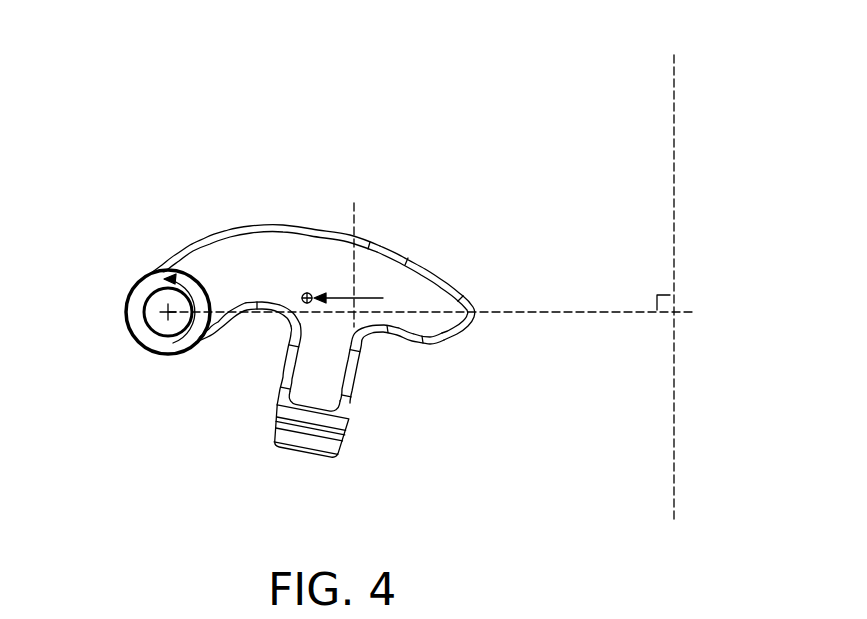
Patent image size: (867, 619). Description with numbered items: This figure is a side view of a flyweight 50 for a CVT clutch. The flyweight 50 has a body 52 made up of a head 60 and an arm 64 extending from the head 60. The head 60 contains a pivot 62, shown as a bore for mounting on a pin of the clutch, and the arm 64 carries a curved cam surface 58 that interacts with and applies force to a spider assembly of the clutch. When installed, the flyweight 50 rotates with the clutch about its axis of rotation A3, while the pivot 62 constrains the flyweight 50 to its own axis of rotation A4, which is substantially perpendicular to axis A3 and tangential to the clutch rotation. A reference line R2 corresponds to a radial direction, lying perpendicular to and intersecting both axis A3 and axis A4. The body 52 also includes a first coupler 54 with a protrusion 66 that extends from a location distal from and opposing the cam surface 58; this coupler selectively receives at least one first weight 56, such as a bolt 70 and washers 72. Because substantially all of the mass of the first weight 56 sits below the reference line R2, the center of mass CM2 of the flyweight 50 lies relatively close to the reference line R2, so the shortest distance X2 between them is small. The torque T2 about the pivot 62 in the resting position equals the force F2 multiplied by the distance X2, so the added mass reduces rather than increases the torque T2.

The flyweight 50 is at (132, 164).
The body 52 is at (266, 245).
The first coupler 54 is at (357, 413).
The first weight 56 is at (248, 452).
The cam surface 58 is at (378, 240).
The head 60 is at (125, 315).
The pivot 62 is at (151, 291).
The arm 64 is at (472, 329).
The protrusion 66 is at (312, 372).
The bolt 70 is at (311, 449).
The washers 72 is at (283, 414).
The axis of rotation A4 is at (168, 312).
The axis of rotation A3 is at (675, 174).
The center of mass CM2 is at (307, 293).
The distance X2 is at (356, 245).
The force F2 is at (377, 296).
The reference line R2 is at (548, 312).
The torque T2 is at (173, 343).